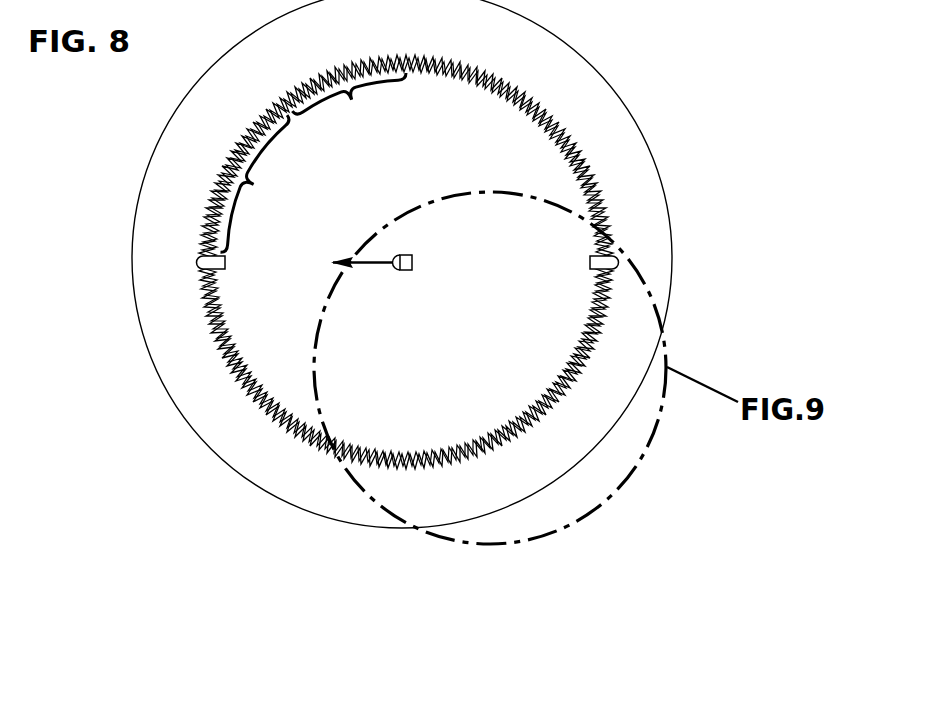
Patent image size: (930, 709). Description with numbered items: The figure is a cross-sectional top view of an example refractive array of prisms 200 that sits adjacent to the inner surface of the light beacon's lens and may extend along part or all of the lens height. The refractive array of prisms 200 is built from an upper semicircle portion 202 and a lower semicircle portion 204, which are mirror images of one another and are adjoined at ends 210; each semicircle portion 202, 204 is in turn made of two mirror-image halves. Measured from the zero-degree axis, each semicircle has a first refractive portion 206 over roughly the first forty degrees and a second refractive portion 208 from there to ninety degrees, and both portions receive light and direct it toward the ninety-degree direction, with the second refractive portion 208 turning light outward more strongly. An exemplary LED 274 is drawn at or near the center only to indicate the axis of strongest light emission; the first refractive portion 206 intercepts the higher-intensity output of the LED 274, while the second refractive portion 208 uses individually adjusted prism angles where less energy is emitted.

The refractive array of prisms 200 is at (389, 251).
The upper semicircle portion 202 is at (197, 231).
The lower semicircle portion 204 is at (603, 197).
The first refractive portion 206 is at (349, 106).
The second refractive portion 208 is at (262, 183).
The ends 210 is at (597, 262).
The LED 274 is at (412, 265).